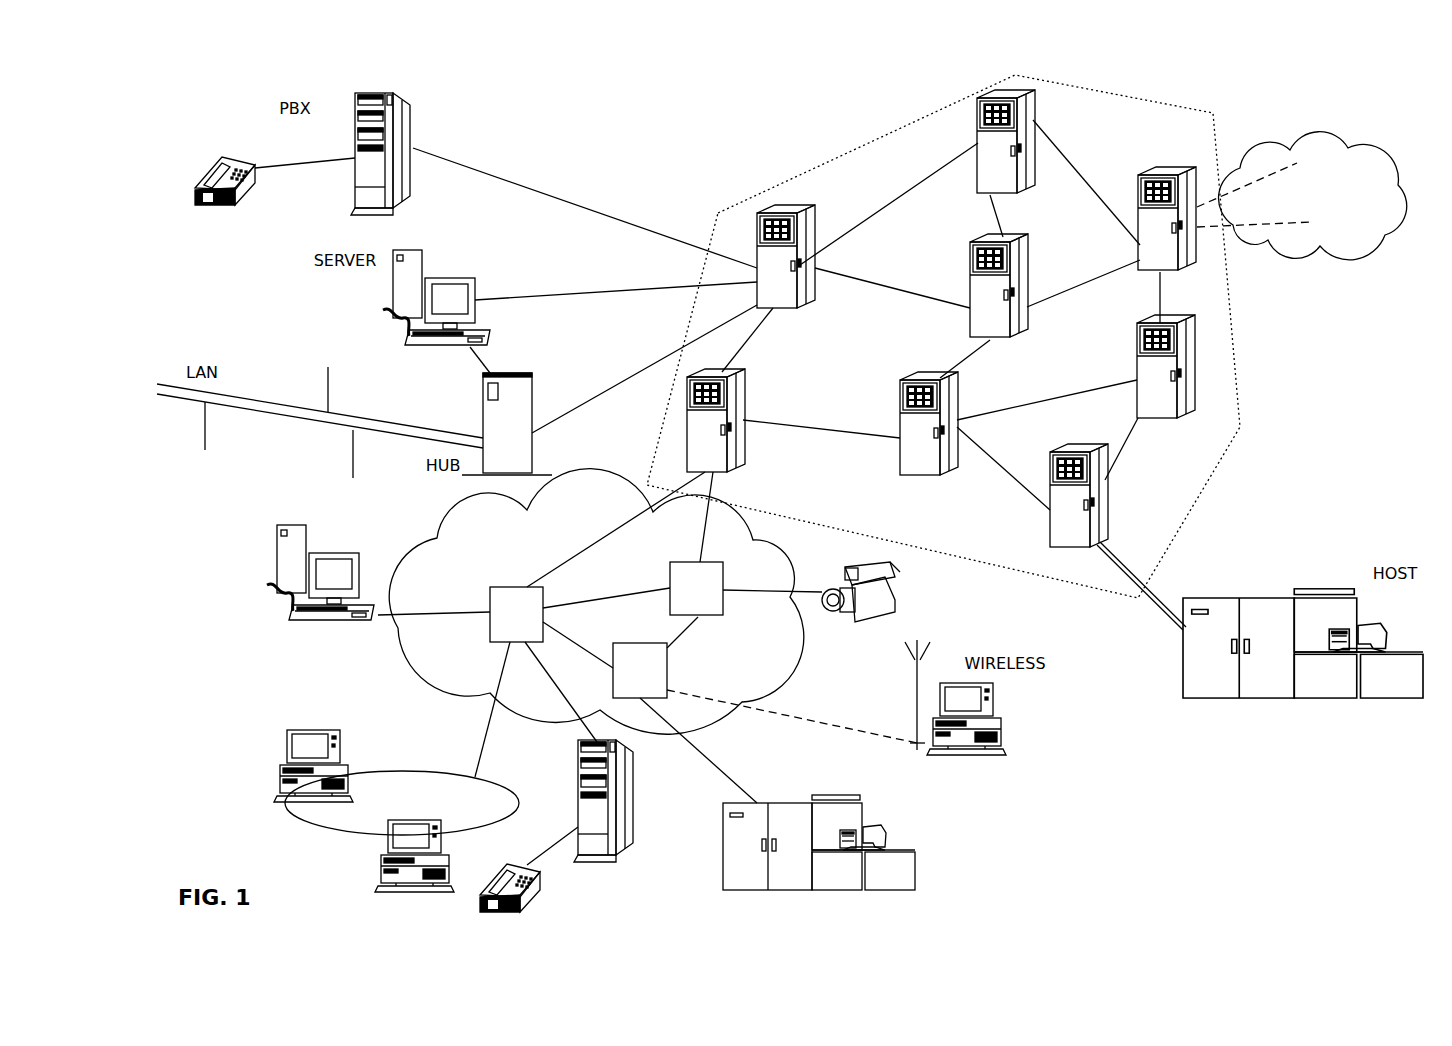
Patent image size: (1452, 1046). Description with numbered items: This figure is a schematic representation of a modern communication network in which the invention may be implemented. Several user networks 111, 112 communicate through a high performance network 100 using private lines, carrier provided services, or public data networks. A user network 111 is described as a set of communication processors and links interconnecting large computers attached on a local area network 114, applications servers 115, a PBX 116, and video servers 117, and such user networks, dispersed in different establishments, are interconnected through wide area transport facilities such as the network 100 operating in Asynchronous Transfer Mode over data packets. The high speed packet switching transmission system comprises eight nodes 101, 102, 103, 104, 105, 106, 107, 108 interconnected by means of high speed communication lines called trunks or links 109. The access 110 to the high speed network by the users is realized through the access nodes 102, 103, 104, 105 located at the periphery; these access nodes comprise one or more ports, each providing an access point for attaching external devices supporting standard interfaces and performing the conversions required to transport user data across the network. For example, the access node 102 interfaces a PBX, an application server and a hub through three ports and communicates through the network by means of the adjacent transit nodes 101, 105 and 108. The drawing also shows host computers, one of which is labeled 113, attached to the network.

The high performance network 100 is at (793, 178).
The transit node 101 is at (1035, 92).
The access node 102 is at (815, 207).
The access node 103 is at (1087, 445).
The access node 104 is at (1187, 167).
The access node 105 is at (743, 390).
The node 106 is at (925, 373).
The node 107 is at (1182, 315).
The transit node 108 is at (1018, 237).
The trunk 109 is at (1098, 282).
The access 110 is at (630, 221).
The user network 111 is at (435, 538).
The user network 112 is at (1323, 133).
The host computer 113 is at (902, 822).
The local area network 114 is at (378, 772).
The applications server 115 is at (298, 523).
The PBX 116 is at (588, 865).
The video server 117 is at (862, 568).